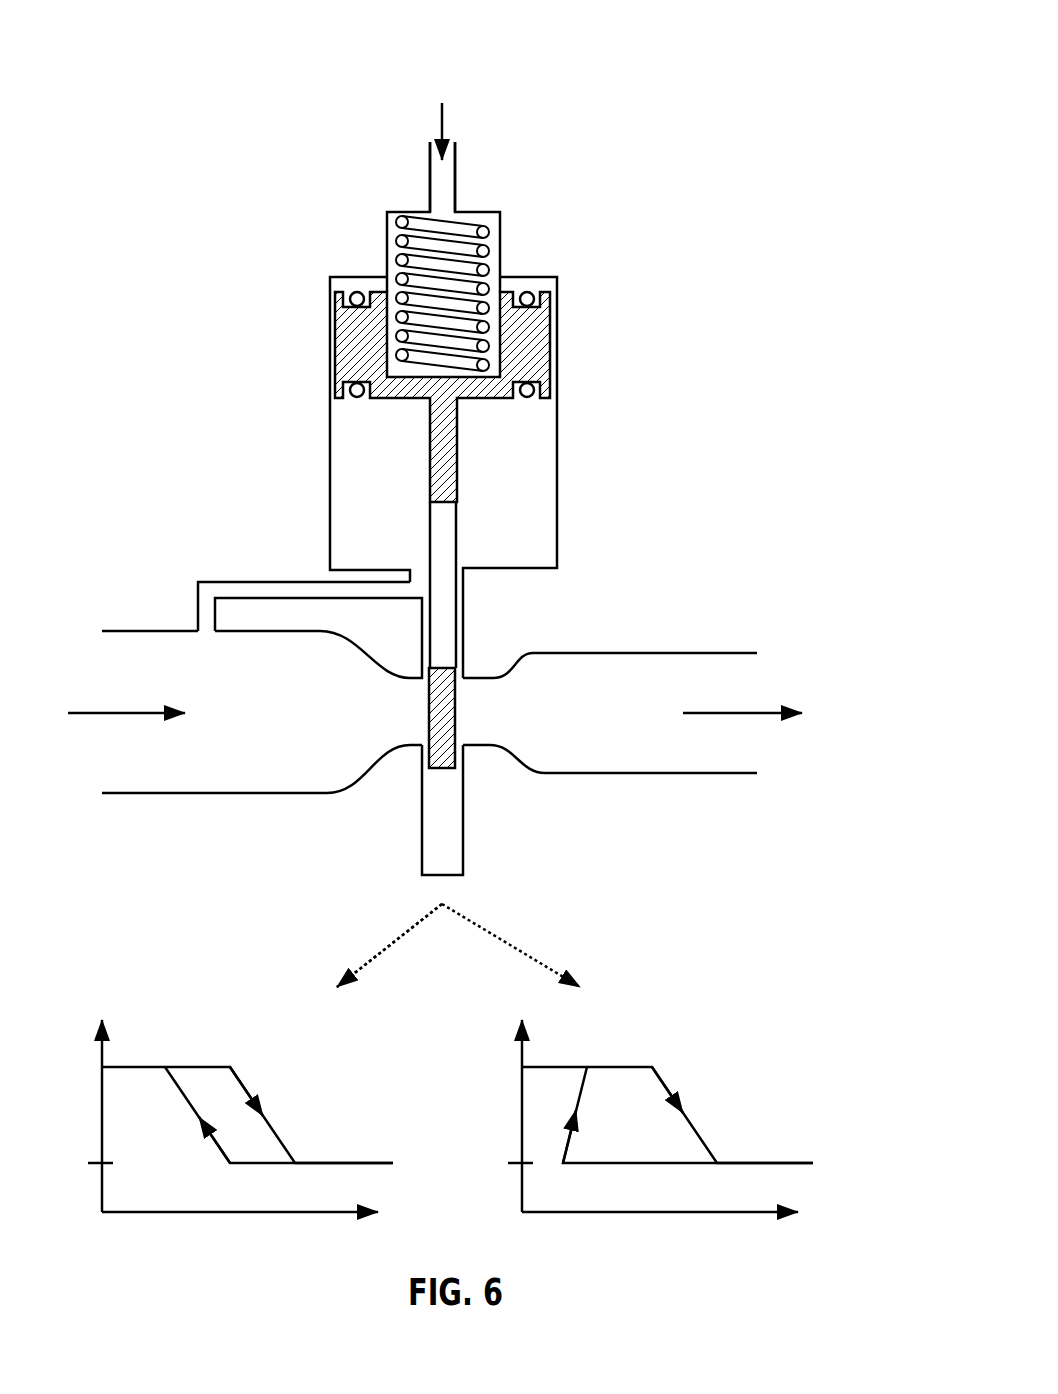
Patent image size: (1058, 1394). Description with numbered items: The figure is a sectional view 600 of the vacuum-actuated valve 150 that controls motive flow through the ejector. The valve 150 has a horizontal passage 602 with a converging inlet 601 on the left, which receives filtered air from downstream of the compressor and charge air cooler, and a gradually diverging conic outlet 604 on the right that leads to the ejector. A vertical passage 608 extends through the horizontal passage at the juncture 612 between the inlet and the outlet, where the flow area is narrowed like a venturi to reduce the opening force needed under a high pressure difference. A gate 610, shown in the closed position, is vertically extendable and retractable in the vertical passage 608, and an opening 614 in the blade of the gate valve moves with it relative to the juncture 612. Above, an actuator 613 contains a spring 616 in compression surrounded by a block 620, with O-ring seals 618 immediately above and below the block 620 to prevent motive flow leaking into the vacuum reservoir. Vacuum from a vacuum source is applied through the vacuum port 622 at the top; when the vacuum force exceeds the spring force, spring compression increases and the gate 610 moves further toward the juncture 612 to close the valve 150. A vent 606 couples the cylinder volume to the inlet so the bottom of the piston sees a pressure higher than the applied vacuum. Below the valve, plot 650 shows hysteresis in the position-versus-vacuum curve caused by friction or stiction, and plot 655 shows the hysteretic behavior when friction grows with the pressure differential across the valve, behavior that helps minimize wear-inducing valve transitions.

The sectional view 600 is at (737, 78).
The vacuum-actuated valve 150 is at (632, 488).
The converging inlet 601 is at (148, 631).
The horizontal passage 602 is at (446, 711).
The diverging outlet 604 is at (685, 653).
The vent 606 is at (242, 582).
The vertical passage 608 is at (442, 810).
The gate 610 is at (447, 740).
The juncture 612 is at (480, 775).
The actuator 613 is at (498, 252).
The opening 614 is at (448, 562).
The spring 616 is at (473, 220).
The O-ring seals 618 is at (527, 385).
The block 620 is at (355, 345).
The vacuum port 622 is at (448, 197).
The plot 650 is at (250, 1037).
The plot 655 is at (682, 1042).